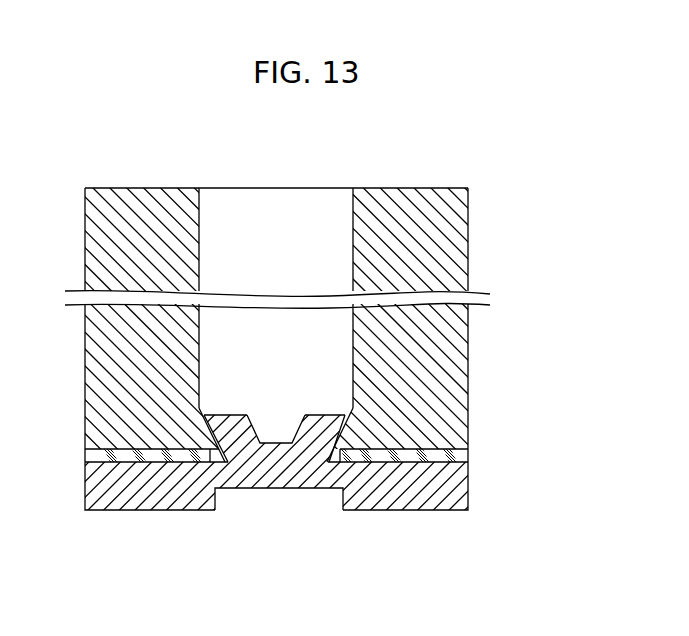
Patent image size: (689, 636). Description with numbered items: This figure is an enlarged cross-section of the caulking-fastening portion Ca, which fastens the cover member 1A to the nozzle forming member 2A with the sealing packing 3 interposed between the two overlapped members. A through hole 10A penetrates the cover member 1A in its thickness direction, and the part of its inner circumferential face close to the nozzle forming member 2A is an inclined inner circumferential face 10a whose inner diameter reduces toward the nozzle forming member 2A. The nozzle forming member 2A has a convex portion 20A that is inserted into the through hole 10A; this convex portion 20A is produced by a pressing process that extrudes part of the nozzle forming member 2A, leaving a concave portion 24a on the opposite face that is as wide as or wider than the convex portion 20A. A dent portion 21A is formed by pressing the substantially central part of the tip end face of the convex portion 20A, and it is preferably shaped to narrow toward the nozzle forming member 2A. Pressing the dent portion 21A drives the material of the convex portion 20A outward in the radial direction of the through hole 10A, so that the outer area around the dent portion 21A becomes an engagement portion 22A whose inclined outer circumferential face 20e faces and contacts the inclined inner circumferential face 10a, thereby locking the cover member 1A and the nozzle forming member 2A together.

The cover member 1A is at (400, 202).
The through hole 10A is at (280, 202).
The inclined inner circumferential face 10a is at (214, 434).
The nozzle forming member 2A is at (412, 500).
The convex portion 20A is at (289, 456).
The inclined outer circumferential face 20e is at (215, 434).
The dent portion 21A is at (266, 435).
The engagement portion 22A is at (335, 406).
The concave portion 24a is at (252, 500).
The sealing packing 3 is at (458, 461).
The caulking-fastening portion Ca is at (224, 514).